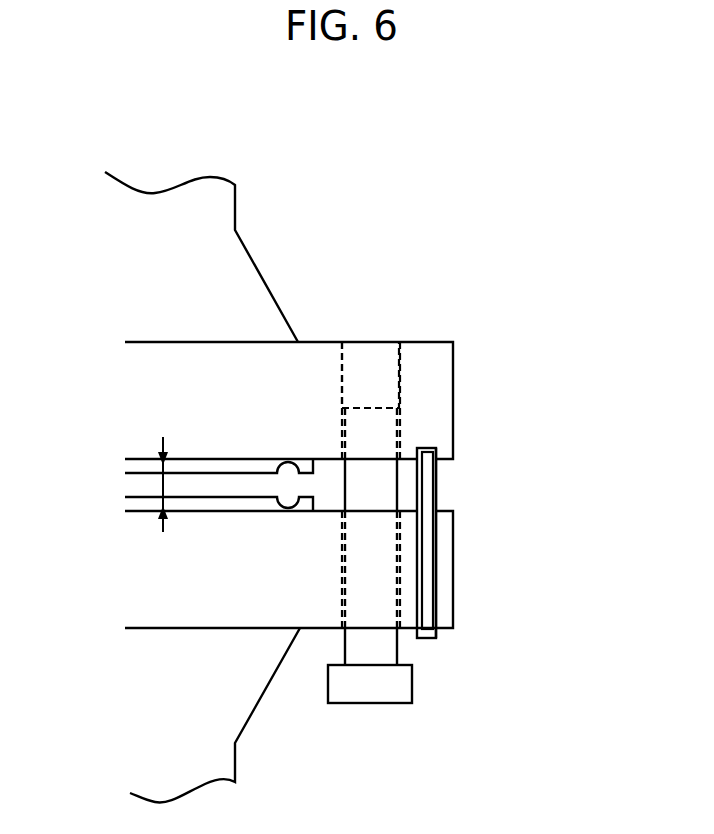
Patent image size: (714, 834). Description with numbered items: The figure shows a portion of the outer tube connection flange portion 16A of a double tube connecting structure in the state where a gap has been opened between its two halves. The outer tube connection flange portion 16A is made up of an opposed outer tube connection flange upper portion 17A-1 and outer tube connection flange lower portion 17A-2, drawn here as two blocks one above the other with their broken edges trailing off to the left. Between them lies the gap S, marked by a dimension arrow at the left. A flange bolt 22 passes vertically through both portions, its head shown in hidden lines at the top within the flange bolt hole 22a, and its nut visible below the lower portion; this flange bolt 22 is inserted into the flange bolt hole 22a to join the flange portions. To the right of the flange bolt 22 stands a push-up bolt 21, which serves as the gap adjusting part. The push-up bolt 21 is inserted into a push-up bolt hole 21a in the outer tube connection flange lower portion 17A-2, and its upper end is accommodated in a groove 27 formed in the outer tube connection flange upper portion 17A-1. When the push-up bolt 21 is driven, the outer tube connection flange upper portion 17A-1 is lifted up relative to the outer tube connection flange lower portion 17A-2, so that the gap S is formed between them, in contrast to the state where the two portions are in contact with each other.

The outer tube connection flange portion 16A is at (453, 317).
The outer tube connection flange upper portion 17A-1 is at (453, 365).
The outer tube connection flange lower portion 17A-2 is at (453, 535).
The flange bolt 22 is at (343, 703).
The flange bolt hole 22a is at (399, 380).
The push-up bolt 21 is at (422, 640).
The push-up bolt hole 21a is at (437, 587).
The groove 27 is at (420, 446).
The gap S is at (163, 485).